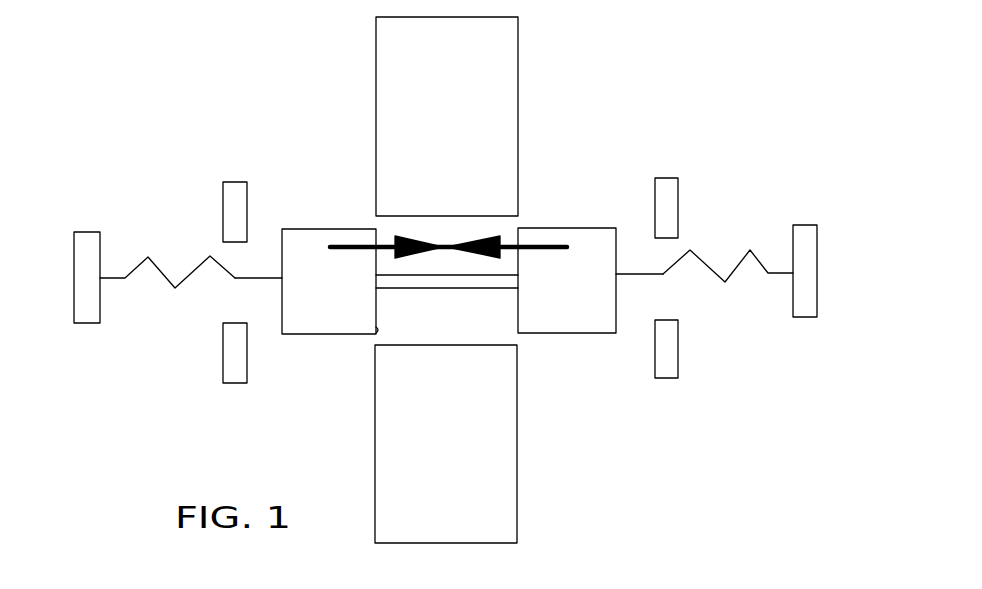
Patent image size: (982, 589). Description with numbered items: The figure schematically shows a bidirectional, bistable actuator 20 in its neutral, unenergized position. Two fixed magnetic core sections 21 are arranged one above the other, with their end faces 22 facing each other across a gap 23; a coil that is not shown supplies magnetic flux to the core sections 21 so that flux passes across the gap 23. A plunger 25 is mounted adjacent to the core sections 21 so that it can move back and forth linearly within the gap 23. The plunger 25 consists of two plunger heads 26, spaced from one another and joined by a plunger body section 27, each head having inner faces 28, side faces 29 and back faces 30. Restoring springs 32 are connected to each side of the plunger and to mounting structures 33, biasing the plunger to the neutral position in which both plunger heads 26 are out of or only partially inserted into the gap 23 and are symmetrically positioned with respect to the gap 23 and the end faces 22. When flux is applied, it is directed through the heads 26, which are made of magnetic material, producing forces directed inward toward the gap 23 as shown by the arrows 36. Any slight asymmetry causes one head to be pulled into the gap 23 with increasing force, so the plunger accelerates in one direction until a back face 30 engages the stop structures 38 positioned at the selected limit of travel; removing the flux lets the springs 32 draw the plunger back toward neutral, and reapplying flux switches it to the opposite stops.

The actuator 20 is at (547, 78).
The magnetic core sections 21 is at (376, 72).
The end faces 22 is at (503, 218).
The gap 23 is at (385, 323).
The plunger 25 is at (603, 342).
The plunger heads 26 is at (295, 228).
The plunger body section 27 is at (450, 288).
The inner faces 28 is at (343, 228).
The side faces 29 is at (322, 337).
The back faces 30 is at (282, 293).
The restoring springs 32 is at (157, 265).
The mounting structures 33 is at (90, 323).
The arrows 36 is at (417, 236).
The stop structures 38 is at (223, 192).